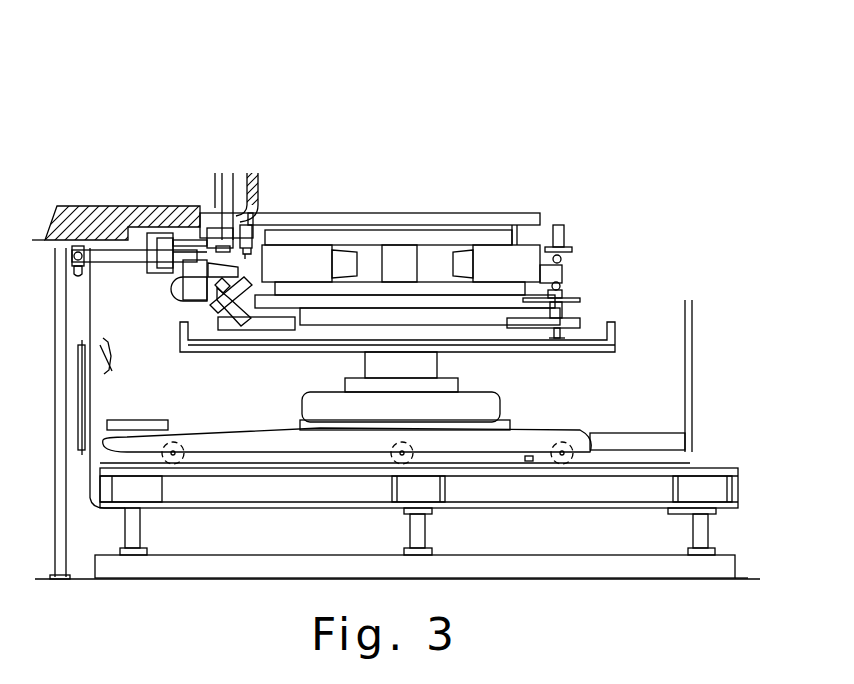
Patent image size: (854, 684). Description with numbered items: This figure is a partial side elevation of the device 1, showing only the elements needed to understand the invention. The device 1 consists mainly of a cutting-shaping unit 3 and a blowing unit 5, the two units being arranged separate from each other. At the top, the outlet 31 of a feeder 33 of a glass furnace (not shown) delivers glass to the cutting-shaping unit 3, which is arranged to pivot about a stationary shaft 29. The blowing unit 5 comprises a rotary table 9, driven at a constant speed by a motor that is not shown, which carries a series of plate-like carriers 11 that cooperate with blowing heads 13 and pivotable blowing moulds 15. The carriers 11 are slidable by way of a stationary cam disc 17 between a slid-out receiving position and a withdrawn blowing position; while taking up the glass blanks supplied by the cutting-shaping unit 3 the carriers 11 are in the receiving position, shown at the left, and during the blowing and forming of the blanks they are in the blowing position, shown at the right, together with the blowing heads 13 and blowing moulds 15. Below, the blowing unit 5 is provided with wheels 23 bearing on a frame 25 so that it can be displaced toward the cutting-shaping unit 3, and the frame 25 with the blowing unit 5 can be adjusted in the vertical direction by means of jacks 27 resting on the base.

The device 1 is at (540, 90).
The cutting-shaping unit 3 is at (134, 290).
The blowing unit 5 is at (632, 262).
The rotary table 9 is at (498, 299).
The plate-like carriers 11 is at (560, 272).
The blowing heads 13 is at (566, 233).
The pivotable blowing moulds 15 is at (562, 308).
The stationary cam disc 17 is at (445, 232).
The wheels 23 is at (392, 463).
The frame 25 is at (251, 509).
The jacks 27 is at (426, 531).
The stationary shaft 29 is at (78, 250).
The outlet 31 is at (205, 215).
The feeder 33 is at (257, 187).